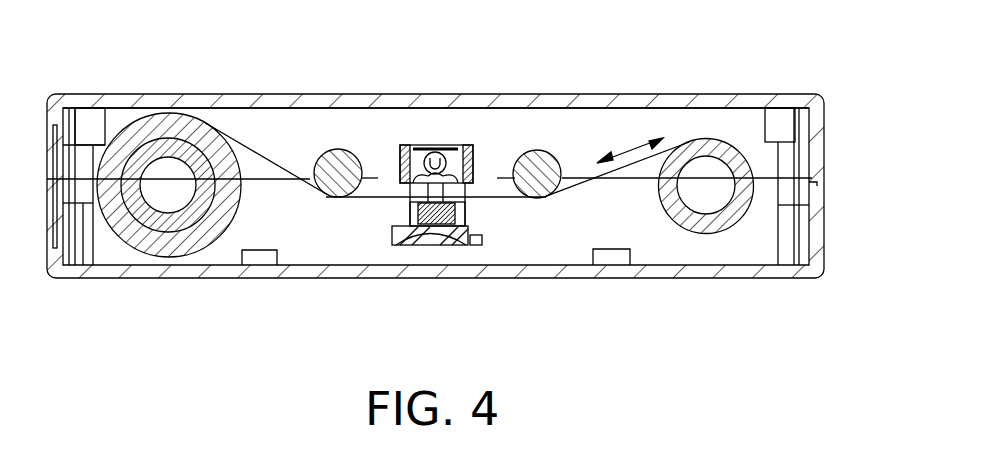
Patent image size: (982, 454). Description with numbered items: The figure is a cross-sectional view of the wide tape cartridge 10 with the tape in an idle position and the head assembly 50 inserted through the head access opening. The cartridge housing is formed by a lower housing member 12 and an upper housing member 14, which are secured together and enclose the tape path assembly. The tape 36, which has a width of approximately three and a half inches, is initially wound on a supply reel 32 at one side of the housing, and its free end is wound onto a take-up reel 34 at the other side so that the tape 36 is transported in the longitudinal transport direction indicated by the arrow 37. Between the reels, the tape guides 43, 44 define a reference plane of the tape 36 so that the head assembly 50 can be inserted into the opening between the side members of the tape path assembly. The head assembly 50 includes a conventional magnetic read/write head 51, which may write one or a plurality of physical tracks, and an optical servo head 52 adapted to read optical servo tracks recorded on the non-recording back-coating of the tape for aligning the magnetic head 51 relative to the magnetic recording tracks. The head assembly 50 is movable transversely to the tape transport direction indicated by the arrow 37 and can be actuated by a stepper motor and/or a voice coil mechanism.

The wide tape cartridge 10 is at (143, 291).
The lower housing member 12 is at (703, 272).
The upper housing member 14 is at (825, 99).
The supply reel 32 is at (157, 119).
The take-up reel 34 is at (725, 142).
The tape 36 is at (257, 152).
The arrow 37 is at (637, 147).
The tape guide 43 is at (541, 150).
The tape guide 44 is at (339, 149).
The head assembly 50 is at (470, 246).
The magnetic read/write head 51 is at (392, 231).
The optical servo head 52 is at (438, 145).